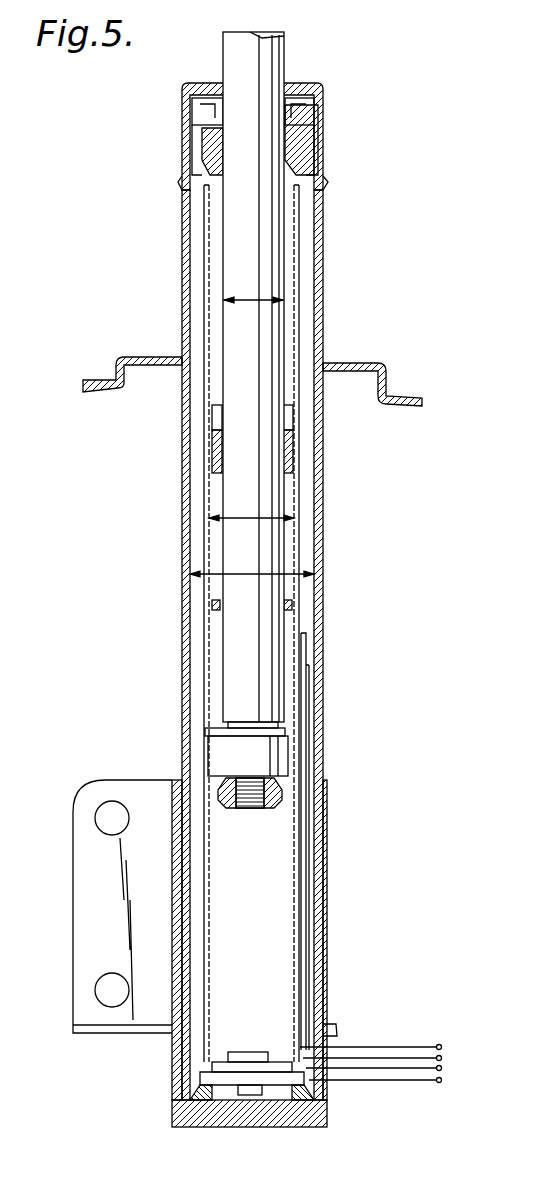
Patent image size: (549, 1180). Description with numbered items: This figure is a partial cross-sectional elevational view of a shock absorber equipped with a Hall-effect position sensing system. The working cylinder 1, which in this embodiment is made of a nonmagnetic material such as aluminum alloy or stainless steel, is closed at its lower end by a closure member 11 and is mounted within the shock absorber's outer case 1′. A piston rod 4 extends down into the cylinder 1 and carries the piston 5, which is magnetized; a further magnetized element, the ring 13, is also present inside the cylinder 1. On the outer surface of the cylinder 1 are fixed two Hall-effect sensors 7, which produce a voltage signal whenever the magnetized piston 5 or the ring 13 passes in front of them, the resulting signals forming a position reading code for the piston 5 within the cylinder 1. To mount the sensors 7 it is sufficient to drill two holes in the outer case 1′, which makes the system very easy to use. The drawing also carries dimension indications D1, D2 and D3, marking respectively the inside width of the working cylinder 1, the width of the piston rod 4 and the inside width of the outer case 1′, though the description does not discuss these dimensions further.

The work cylinder 1 is at (297, 241).
The outer case 1′ is at (320, 306).
The piston rod 4 is at (262, 140).
The piston 5 is at (281, 748).
The Hall-effect sensors 7 is at (299, 652).
The closure member 11 is at (300, 1094).
The ring 13 is at (291, 606).
The inner cylinder diameter D1 is at (253, 516).
The piston rod diameter D2 is at (252, 300).
The outer tube inner diameter D3 is at (253, 574).